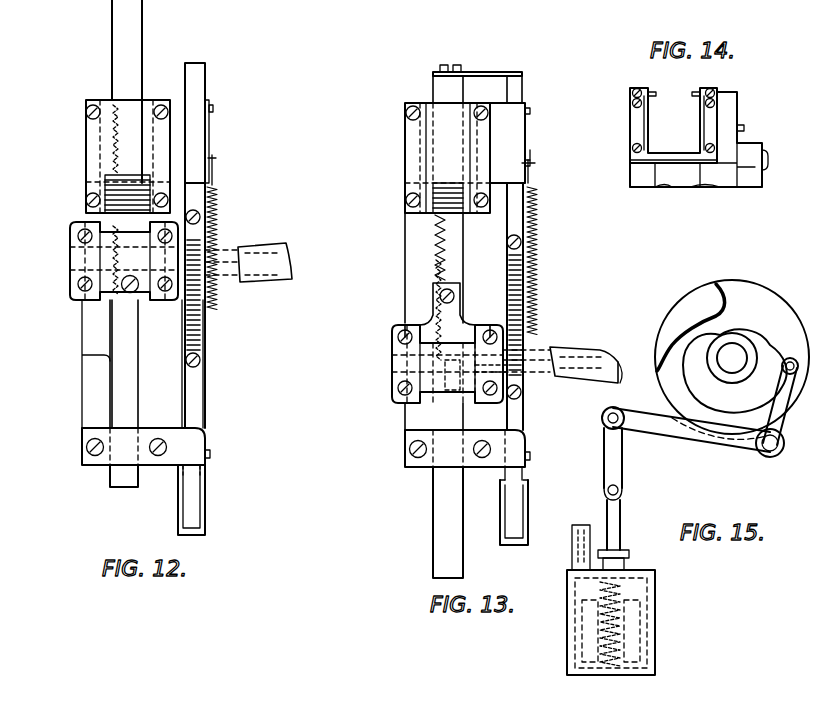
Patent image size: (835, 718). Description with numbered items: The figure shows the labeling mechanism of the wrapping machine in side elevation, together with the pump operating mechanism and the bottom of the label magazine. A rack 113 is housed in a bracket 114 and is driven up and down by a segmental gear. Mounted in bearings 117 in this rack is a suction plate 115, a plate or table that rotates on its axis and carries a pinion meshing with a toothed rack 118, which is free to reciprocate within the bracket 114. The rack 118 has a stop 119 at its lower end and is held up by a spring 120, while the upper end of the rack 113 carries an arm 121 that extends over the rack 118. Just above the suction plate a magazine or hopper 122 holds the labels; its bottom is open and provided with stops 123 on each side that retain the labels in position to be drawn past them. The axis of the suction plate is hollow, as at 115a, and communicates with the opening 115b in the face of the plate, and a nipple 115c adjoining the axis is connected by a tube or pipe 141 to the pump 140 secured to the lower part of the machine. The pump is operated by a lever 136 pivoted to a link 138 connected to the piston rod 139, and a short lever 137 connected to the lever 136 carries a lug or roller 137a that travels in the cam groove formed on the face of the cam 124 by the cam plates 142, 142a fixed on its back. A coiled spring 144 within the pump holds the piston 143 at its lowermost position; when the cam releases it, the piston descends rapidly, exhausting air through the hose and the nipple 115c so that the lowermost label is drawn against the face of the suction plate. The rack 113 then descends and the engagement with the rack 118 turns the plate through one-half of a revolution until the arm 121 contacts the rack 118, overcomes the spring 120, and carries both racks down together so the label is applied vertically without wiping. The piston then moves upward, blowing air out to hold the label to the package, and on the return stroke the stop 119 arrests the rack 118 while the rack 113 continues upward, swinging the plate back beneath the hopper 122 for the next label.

In FIG. 12, the rack 113 is at (145, 62).
In FIG. 13, the rack 113 is at (433, 525).
In FIG. 13, the bracket 114 is at (405, 434).
In FIG. 13, the suction plate 115 is at (447, 310).
In FIG. 13, the hollow or tubular axis 115a is at (490, 365).
In FIG. 13, the opening 115b is at (425, 378).
In FIG. 13, the nipple 115c is at (538, 355).
In FIG. 12, the bearings 117 is at (73, 290).
In FIG. 13, the bearings 117 is at (393, 392).
In FIG. 12, the toothed rack 118 is at (206, 90).
In FIG. 13, the toothed rack 118 is at (525, 85).
In FIG. 12, the stop 119 is at (206, 527).
In FIG. 13, the stop 119 is at (497, 548).
In FIG. 12, the spring 120 is at (215, 233).
In FIG. 13, the spring 120 is at (538, 285).
In FIG. 13, the arm 121 is at (487, 72).
In FIG. 12, the magazine or hopper 122 is at (85, 136).
In FIG. 13, the magazine or hopper 122 is at (405, 178).
In FIG. 14, the stops 123 is at (640, 127).
In FIG. 15, the cam 124 is at (780, 314).
In FIG. 15, the lever 136 is at (662, 432).
In FIG. 15, the short lever 137 is at (737, 423).
In FIG. 15, the lug or roller 137a is at (721, 447).
In FIG. 15, the link 138 is at (604, 466).
In FIG. 15, the piston rod 139 is at (622, 523).
In FIG. 15, the pump 140 is at (657, 583).
In FIG. 13, the tube or pipe 141 is at (598, 357).
In FIG. 15, the tube or pipe 141 is at (572, 532).
In FIG. 15, the cam plate 142 is at (736, 323).
In FIG. 15, the cam plate 142a is at (700, 297).
In FIG. 15, the piston 143 is at (645, 632).
In FIG. 15, the coiled spring 144 is at (622, 592).